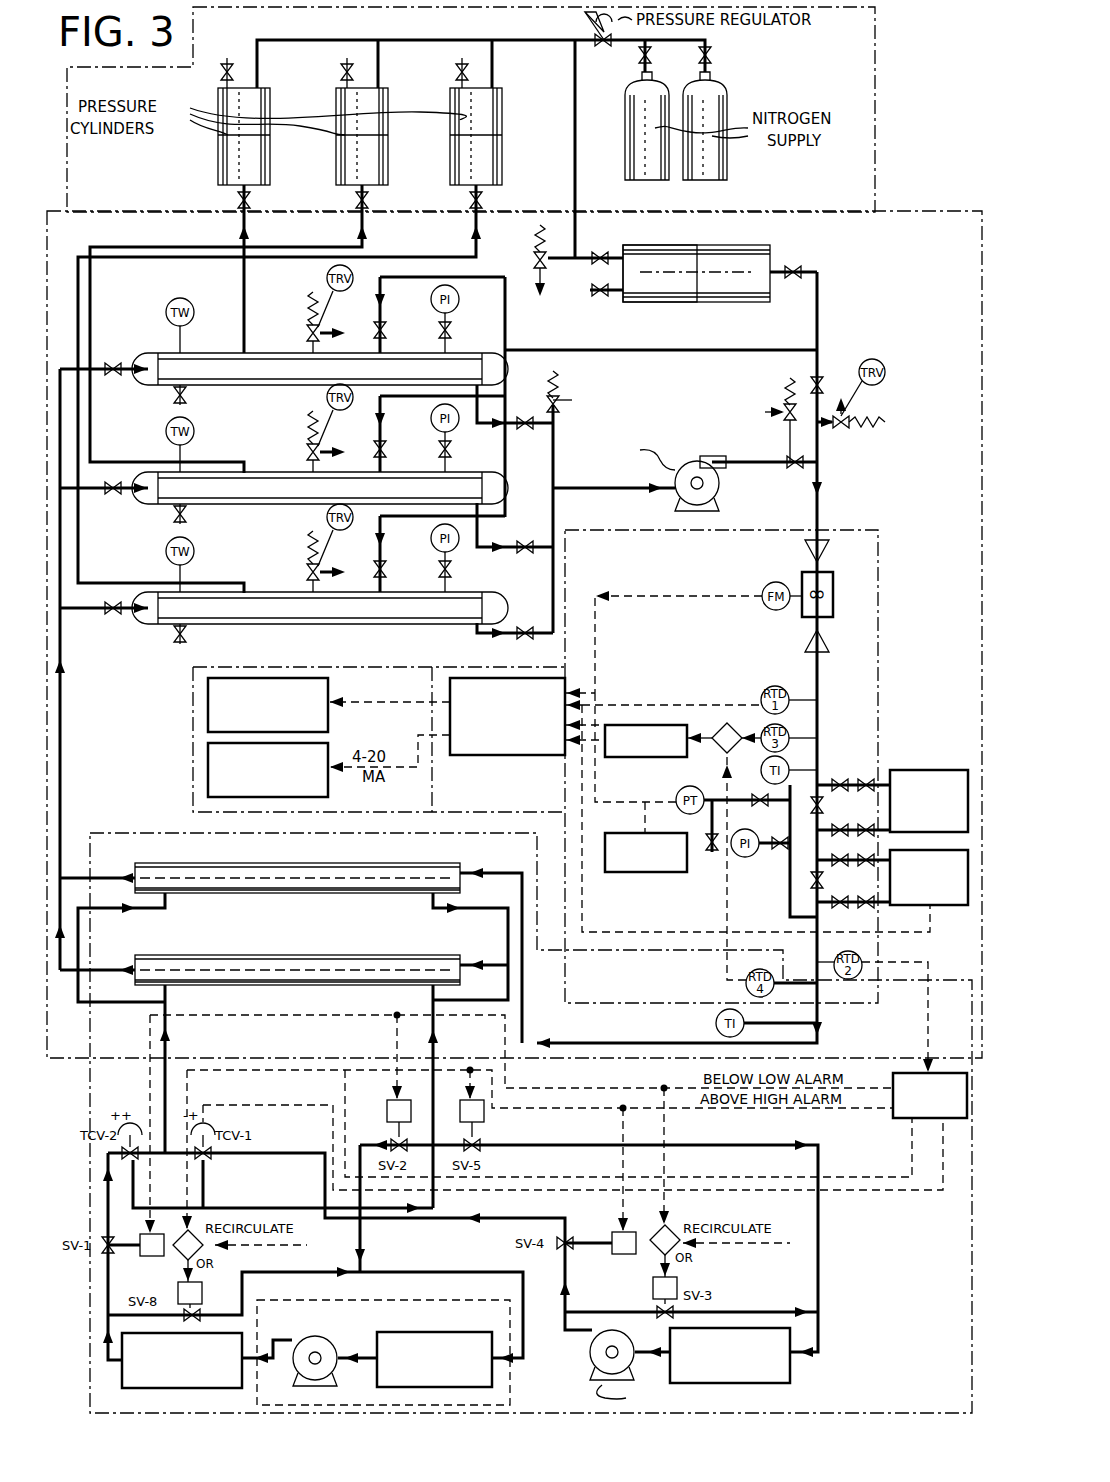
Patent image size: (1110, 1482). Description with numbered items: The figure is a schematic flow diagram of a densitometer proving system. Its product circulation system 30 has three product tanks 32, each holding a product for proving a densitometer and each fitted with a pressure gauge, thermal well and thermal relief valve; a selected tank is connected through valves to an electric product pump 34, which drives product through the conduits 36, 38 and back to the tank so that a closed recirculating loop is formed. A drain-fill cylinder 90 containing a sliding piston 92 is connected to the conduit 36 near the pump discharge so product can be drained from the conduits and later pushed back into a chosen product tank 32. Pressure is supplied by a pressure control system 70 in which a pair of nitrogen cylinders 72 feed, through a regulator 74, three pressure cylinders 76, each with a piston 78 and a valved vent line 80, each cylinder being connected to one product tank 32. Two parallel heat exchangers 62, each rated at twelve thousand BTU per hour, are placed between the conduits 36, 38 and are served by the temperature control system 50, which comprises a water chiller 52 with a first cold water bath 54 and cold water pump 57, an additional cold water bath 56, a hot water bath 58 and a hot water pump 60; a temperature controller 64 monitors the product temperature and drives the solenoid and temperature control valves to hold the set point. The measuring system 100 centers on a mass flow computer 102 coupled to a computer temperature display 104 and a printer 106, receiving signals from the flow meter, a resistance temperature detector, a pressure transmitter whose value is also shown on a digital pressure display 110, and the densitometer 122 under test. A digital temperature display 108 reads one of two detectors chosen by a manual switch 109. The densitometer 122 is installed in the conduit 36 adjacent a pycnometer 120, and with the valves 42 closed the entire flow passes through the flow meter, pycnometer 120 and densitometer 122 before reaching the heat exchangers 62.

The product circulation system 30 is at (903, 211).
The product tanks 32 is at (197, 392).
The product pump 34 is at (712, 460).
The conduit 36 is at (820, 1020).
The conduit 38 is at (62, 797).
The valves 42 is at (824, 806).
The temperature control system 50 is at (90, 1110).
The water chiller 52 is at (393, 1352).
The first cold water bath 54 is at (377, 1370).
The additional cold water bath 56 is at (186, 1388).
The cold water pump 57 is at (292, 1375).
The hot water bath 58 is at (790, 1372).
The hot water pump 60 is at (590, 1352).
The heat exchangers 62 is at (222, 896).
The temperature controller 64 is at (893, 1118).
The pressure control system 70 is at (875, 72).
The nitrogen cylinders 72 is at (638, 108).
The regulator 74 is at (481, 132).
The pressure cylinders 76 is at (375, 136).
The piston 78 is at (270, 168).
The valved vent line 80 is at (222, 82).
The drain-fill cylinder 90 is at (695, 285).
The sliding piston 92 is at (648, 245).
The measuring system 100 is at (186, 760).
The mass flow computer 102 is at (497, 757).
The computer temperature display 104 is at (330, 790).
The printer 106 is at (330, 690).
The digital temperature display 108 is at (648, 757).
The manual switch 109 is at (718, 730).
The digital pressure display 110 is at (644, 872).
The pycnometer 120 is at (918, 770).
The densitometer 122 is at (952, 905).